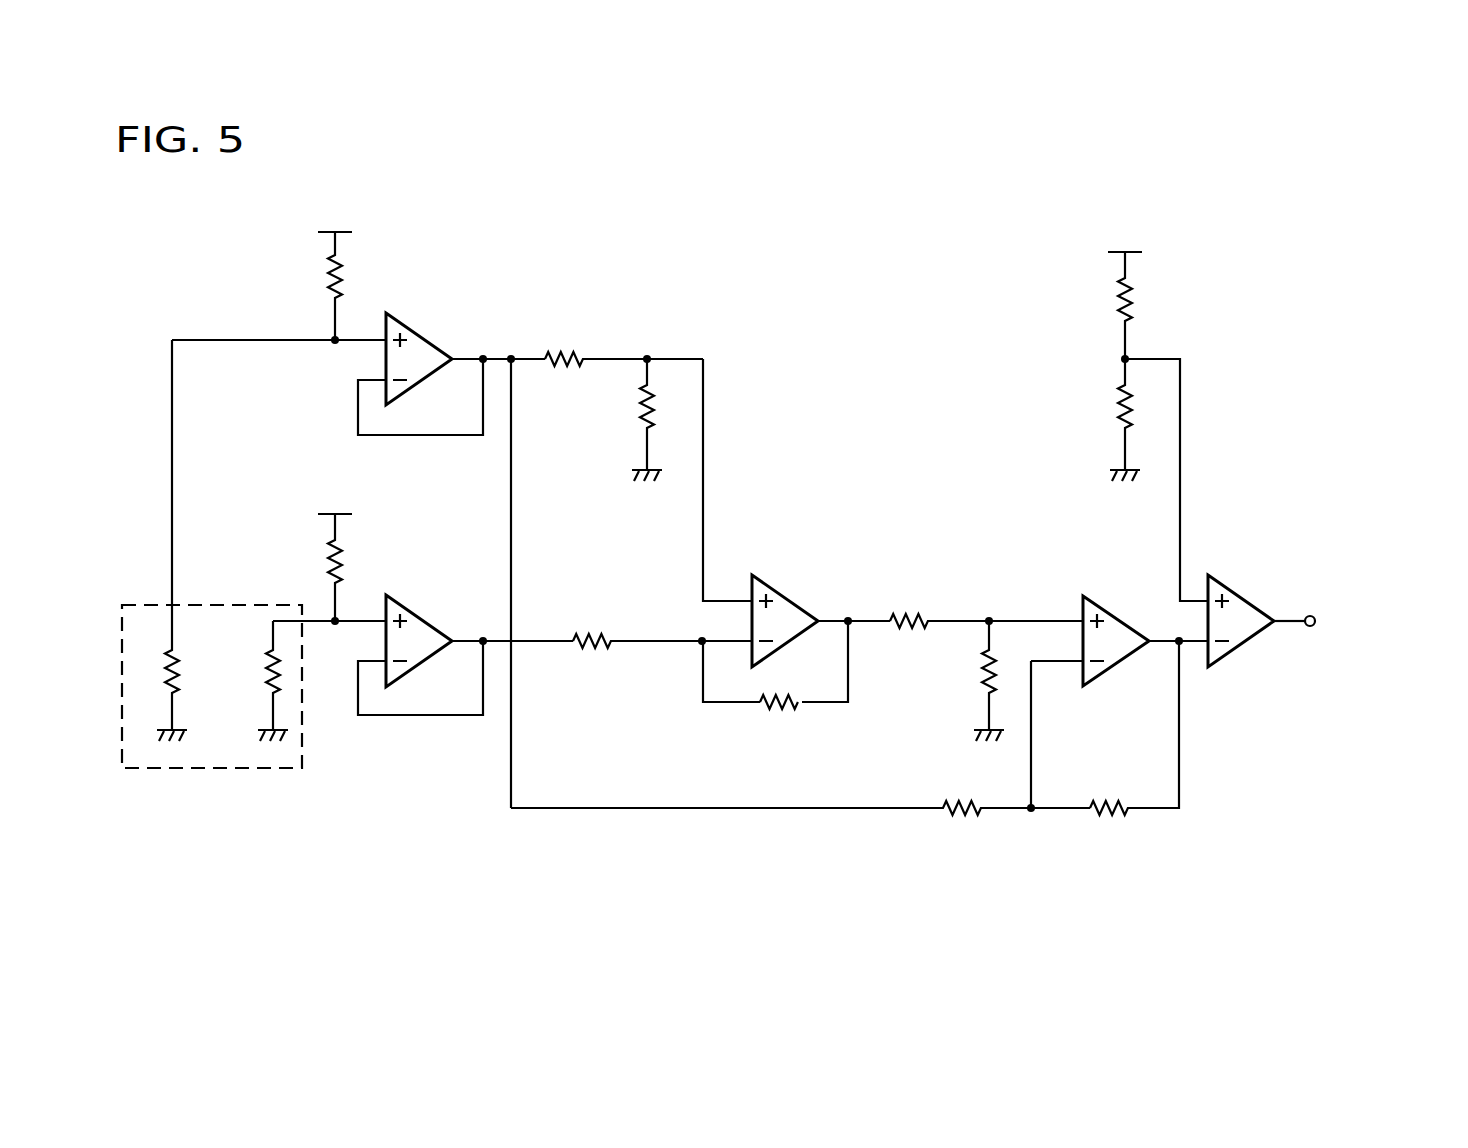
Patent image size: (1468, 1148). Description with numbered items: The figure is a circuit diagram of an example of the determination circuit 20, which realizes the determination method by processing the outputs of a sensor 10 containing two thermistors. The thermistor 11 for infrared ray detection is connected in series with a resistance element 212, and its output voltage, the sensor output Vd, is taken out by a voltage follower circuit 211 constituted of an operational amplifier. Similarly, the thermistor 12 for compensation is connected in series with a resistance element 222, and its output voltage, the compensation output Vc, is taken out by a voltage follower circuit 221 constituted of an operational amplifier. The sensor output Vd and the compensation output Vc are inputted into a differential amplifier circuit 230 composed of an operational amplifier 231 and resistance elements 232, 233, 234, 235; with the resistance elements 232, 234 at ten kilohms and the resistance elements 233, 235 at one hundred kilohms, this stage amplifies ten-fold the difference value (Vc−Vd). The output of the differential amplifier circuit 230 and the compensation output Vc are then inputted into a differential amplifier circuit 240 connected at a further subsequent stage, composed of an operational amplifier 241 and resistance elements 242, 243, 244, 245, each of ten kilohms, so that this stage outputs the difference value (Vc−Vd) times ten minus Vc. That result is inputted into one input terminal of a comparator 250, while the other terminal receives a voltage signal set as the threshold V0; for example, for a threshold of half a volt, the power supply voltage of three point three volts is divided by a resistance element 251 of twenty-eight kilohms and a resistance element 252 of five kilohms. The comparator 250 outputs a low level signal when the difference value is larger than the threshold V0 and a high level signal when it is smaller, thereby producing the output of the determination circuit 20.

The sensor 10 is at (208, 770).
The thermistor for infrared ray detection 11 is at (260, 667).
The thermistor for compensation 12 is at (185, 680).
The determination circuit 20 is at (1242, 452).
The voltage follower circuit 211 is at (423, 617).
The resistance element 212 is at (325, 556).
The voltage follower circuit 221 is at (423, 336).
The resistance element 222 is at (325, 282).
The differential amplifier circuit 230 is at (760, 478).
The operational amplifier 231 is at (789, 598).
The resistance element 232 is at (602, 628).
The resistance element 233 is at (790, 713).
The resistance element 234 is at (573, 345).
The resistance element 235 is at (635, 418).
The differential amplifier circuit 240 is at (1025, 546).
The operational amplifier 241 is at (1118, 617).
The resistance element 242 is at (970, 820).
The resistance element 243 is at (1117, 820).
The resistance element 244 is at (918, 605).
The resistance element 245 is at (978, 680).
The comparator 250 is at (1243, 598).
The resistance element 251 is at (1112, 300).
The resistance element 252 is at (1112, 408).